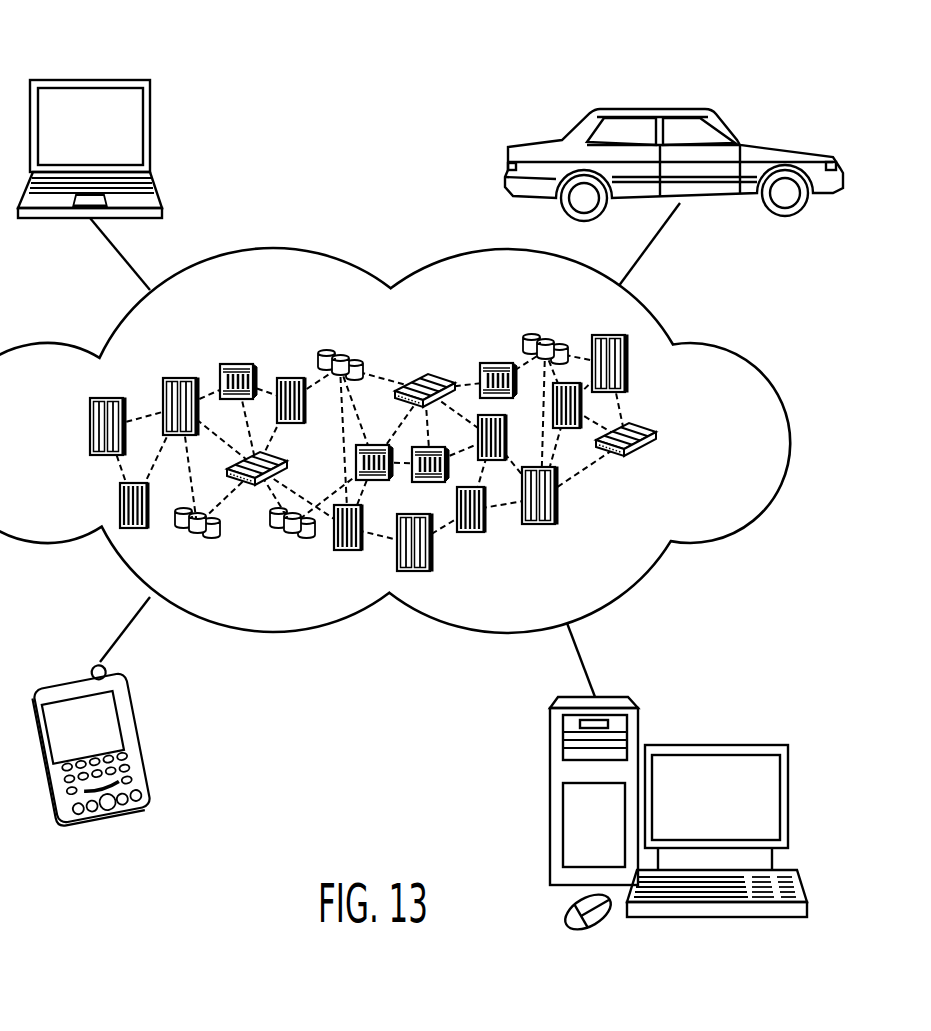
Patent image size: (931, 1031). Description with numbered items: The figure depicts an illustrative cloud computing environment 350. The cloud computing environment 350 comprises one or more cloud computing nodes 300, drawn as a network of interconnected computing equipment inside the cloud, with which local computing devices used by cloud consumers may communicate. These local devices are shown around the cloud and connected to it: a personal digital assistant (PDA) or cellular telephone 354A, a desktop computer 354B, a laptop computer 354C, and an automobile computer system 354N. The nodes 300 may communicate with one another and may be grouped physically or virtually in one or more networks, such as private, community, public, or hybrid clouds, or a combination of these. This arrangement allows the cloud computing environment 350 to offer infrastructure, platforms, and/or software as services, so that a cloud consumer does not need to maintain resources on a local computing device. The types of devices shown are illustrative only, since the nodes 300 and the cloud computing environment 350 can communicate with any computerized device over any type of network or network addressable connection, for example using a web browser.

The cloud computing node 300 is at (672, 441).
The cloud computing environment 350 is at (731, 345).
The personal digital assistant (PDA) or cellular telephone 354A is at (70, 680).
The desktop computer 354B is at (715, 743).
The laptop computer 354C is at (90, 80).
The automobile computer system 354N is at (652, 108).